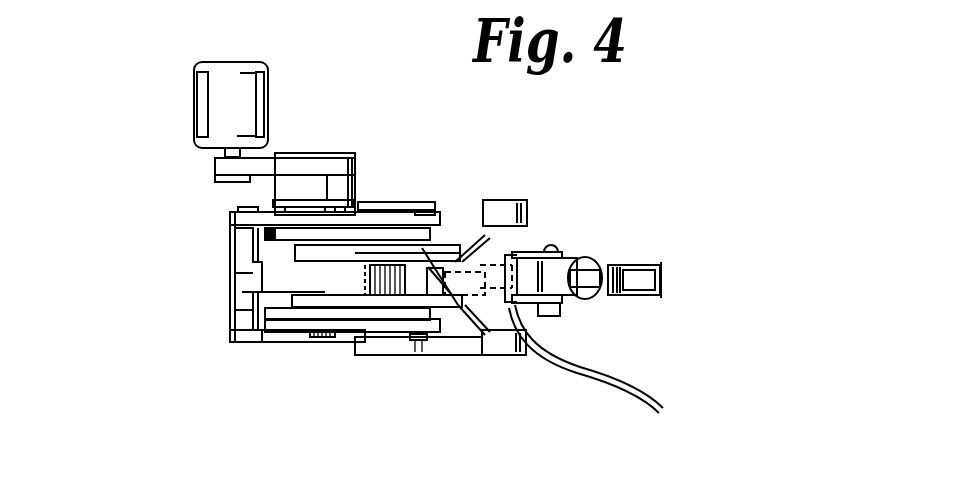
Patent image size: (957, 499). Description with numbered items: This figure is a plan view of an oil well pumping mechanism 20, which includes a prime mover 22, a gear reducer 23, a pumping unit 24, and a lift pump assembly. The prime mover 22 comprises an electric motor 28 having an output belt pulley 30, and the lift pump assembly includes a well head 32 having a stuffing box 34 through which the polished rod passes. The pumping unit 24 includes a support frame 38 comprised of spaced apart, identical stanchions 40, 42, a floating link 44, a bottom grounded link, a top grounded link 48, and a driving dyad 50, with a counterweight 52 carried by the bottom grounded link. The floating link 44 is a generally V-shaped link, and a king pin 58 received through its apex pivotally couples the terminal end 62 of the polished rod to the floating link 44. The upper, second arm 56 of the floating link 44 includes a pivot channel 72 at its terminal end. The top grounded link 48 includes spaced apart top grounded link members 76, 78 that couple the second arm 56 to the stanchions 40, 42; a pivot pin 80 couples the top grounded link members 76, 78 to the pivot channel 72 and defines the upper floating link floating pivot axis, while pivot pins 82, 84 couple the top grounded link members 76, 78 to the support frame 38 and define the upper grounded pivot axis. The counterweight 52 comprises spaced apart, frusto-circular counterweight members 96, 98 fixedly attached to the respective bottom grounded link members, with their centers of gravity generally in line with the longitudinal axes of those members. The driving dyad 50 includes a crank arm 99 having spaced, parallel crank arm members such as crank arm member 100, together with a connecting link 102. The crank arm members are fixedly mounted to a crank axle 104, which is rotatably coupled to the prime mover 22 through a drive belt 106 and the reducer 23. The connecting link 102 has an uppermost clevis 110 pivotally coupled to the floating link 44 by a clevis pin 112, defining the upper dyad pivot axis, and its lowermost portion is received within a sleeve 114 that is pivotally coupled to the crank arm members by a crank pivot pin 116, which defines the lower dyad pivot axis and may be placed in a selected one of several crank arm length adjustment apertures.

The oil well pumping mechanism 20 is at (642, 150).
The prime mover 22 is at (186, 67).
The gear reducer 23 is at (367, 238).
The pumping unit 24 is at (300, 372).
The electric motor 28 is at (195, 112).
The output belt pulley 30 is at (220, 186).
The well head 32 is at (661, 280).
The stuffing box 34 is at (661, 288).
The support frame 38 is at (604, 366).
The stanchion 40 is at (265, 347).
The stanchion 42 is at (380, 228).
The floating link 44 is at (245, 258).
The top grounded link 48 is at (403, 205).
The driving dyad 50 is at (480, 262).
The counterweight 52 is at (530, 199).
The second arm 56 is at (235, 273).
The king pin 58 is at (625, 265).
The terminal end 62 is at (620, 298).
The pivot channel 72 is at (240, 310).
The top grounded link member 76 is at (272, 345).
The top grounded link member 78 is at (282, 213).
The pivot pin 80 is at (245, 340).
The pivot pin 82 is at (420, 357).
The pivot pin 84 is at (432, 212).
The counterweight member 96 is at (493, 355).
The counterweight member 98 is at (528, 214).
The crank arm 99 is at (312, 286).
The crank arm member 100 is at (383, 357).
The connecting link 102 is at (530, 340).
The crank axle 104 is at (327, 190).
The drive belt 106 is at (312, 150).
The uppermost clevis 110 is at (560, 314).
The clevis pin 112 is at (563, 253).
The sleeve 114 is at (445, 248).
The crank pivot pin 116 is at (497, 200).